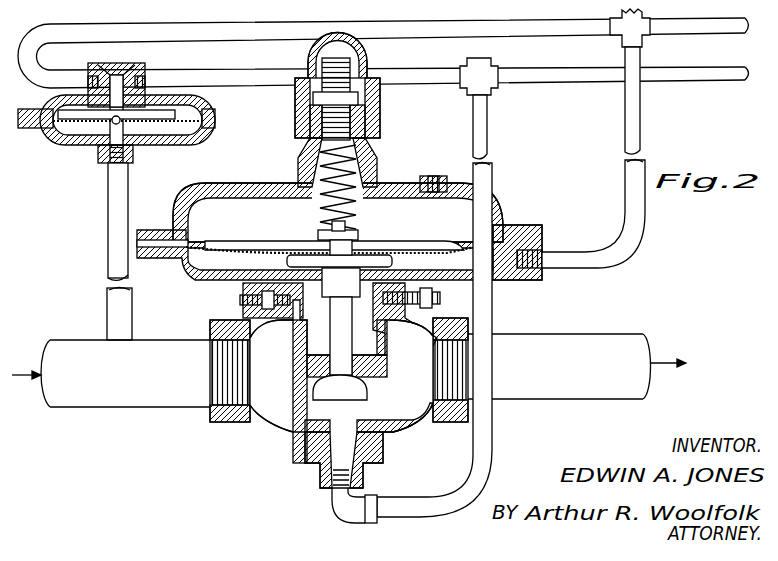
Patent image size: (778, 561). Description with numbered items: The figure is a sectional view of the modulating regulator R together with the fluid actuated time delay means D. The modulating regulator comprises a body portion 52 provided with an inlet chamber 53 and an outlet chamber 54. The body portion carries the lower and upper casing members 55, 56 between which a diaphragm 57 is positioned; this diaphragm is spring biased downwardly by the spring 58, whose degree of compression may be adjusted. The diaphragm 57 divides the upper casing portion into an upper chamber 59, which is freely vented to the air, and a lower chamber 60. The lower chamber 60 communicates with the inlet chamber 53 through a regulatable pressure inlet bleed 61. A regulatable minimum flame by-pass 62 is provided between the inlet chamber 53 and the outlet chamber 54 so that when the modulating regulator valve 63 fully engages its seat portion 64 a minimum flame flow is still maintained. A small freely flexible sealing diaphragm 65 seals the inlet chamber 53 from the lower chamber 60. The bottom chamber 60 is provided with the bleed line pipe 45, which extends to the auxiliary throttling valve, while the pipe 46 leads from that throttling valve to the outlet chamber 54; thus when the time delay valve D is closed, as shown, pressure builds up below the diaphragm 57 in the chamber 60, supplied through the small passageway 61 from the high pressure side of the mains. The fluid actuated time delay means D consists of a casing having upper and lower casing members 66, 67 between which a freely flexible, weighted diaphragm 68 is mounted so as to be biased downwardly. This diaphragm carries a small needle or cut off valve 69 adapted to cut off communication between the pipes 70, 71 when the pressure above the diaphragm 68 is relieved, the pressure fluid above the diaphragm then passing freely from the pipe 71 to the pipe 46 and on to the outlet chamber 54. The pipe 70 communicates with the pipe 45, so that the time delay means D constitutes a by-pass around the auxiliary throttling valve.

The bleed line pipe 45 is at (636, 237).
The pipe 46 is at (494, 444).
The body portion 52 is at (283, 432).
The inlet chamber 53 is at (270, 398).
The outlet chamber 54 is at (402, 428).
The lower casing member 55 is at (213, 284).
The upper casing member 56 is at (296, 182).
The diaphragm 57 is at (211, 242).
The spring 58 is at (355, 202).
The upper chamber 59 is at (478, 215).
The lower chamber 60 is at (472, 257).
The regulatable pressure inlet bleed 61 is at (292, 309).
The minimum flame by-pass 62 is at (402, 318).
The modulating regulator valve 63 is at (342, 396).
The seat portion 64 is at (358, 374).
The sealing diaphragm 65 is at (319, 296).
The upper casing member 66 is at (199, 98).
The lower casing member 67 is at (178, 141).
The diaphragm 68 is at (176, 118).
The needle valve 69 is at (140, 63).
The pipe 70 is at (237, 43).
The pipe 71 is at (293, 85).
The fluid actuated time delay means D is at (84, 153).
The modulating regulator R is at (261, 436).